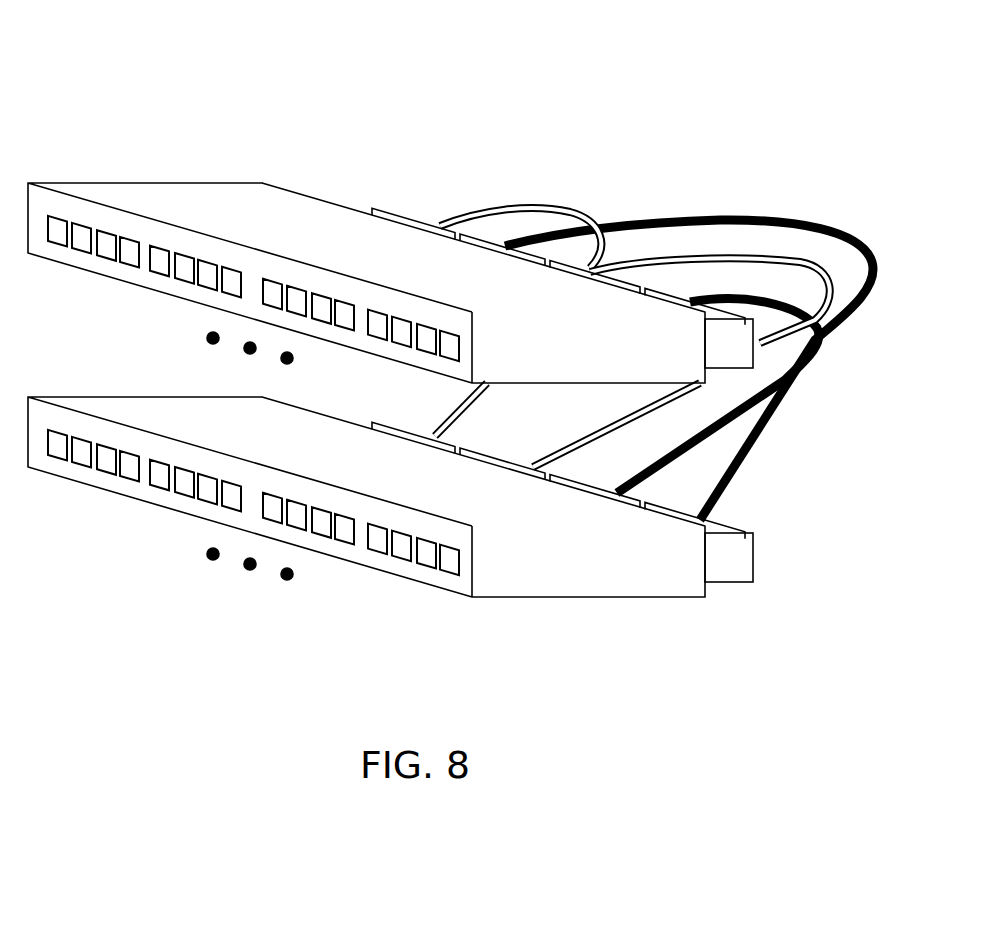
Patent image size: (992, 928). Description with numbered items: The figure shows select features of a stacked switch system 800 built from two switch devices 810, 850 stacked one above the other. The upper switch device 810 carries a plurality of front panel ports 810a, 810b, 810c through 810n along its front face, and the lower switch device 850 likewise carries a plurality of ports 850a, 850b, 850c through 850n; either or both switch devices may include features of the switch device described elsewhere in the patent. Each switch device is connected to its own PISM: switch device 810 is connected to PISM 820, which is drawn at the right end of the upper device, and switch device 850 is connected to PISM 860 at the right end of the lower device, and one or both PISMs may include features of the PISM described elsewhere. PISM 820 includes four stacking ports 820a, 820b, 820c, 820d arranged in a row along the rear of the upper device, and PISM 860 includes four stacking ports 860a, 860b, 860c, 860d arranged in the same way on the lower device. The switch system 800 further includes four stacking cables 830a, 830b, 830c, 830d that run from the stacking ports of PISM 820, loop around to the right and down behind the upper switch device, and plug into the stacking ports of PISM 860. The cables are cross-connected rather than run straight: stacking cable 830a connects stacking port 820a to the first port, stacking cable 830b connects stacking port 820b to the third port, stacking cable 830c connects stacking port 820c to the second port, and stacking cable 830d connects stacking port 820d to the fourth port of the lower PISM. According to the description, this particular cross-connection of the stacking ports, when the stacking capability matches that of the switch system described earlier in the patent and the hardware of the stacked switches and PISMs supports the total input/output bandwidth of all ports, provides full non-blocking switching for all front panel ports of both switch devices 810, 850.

The switch system 800 is at (367, 78).
The switch device 810 is at (672, 360).
The port 810a is at (57, 268).
The port 810b is at (79, 274).
The port 810c is at (100, 279).
The port 810n is at (449, 381).
The PISM 820 is at (745, 353).
The stacking port 820a is at (395, 206).
The stacking port 820b is at (503, 230).
The stacking port 820c is at (610, 256).
The stacking port 820d is at (692, 290).
The stacking cable 830a is at (541, 200).
The stacking cable 830b is at (757, 212).
The stacking cable 830c is at (797, 246).
The stacking cable 830d is at (782, 447).
The switch device 850 is at (672, 574).
The port 850a is at (57, 483).
The port 850b is at (79, 489).
The port 850c is at (100, 494).
The port 850n is at (448, 598).
The PISM 860 is at (745, 567).
The stacking port 860a is at (403, 420).
The stacking port 860b is at (502, 447).
The stacking port 860c is at (592, 474).
The stacking port 860d is at (679, 498).